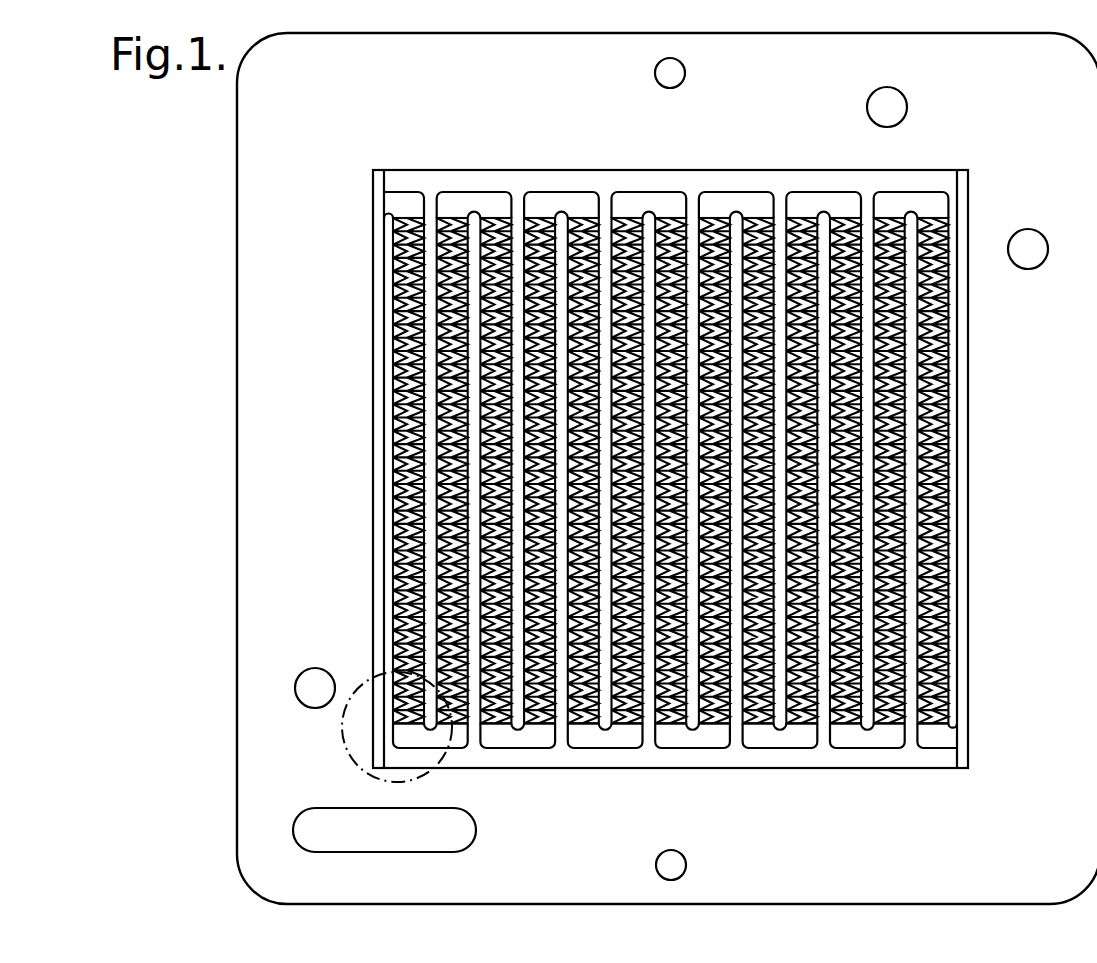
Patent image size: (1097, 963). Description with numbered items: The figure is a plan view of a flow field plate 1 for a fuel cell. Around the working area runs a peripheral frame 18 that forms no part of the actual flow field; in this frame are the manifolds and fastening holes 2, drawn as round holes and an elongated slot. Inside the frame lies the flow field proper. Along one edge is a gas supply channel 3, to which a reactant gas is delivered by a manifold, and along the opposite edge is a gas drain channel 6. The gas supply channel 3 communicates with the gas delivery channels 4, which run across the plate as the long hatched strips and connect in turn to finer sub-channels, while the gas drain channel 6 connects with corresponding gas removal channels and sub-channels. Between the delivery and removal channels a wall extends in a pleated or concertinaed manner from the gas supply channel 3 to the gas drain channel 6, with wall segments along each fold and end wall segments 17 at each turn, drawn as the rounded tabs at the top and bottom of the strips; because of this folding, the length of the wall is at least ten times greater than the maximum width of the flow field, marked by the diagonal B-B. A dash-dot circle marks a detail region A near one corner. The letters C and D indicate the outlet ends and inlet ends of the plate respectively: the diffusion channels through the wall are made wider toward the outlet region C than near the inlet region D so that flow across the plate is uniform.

The flow field plate 1 is at (237, 211).
The manifolds and fastening holes 2 is at (684, 79).
The gas supply channel 3 is at (757, 759).
The gas delivery channels 4 is at (393, 463).
The gas drain channel 6 is at (485, 178).
The end wall segments 17 is at (562, 190).
The peripheral frame 18 is at (1019, 512).
The region A is at (342, 737).
The diagonal B- B is at (968, 166).
The region C (outlet ends) C is at (950, 305).
The region D (inlet ends) D is at (950, 647).